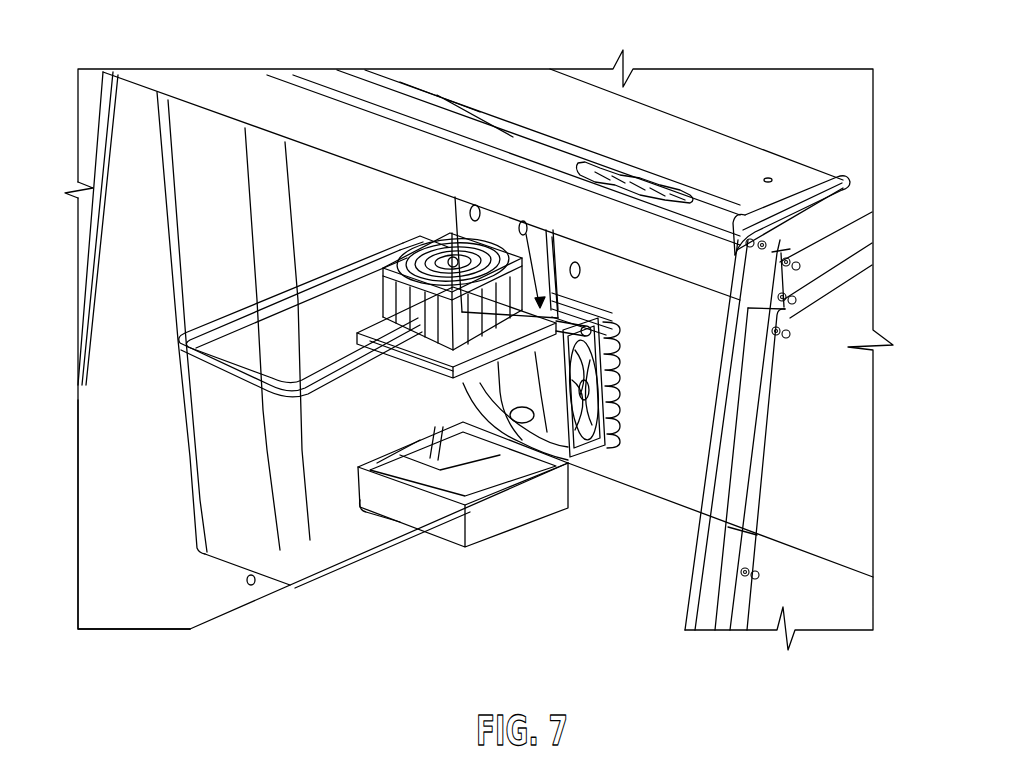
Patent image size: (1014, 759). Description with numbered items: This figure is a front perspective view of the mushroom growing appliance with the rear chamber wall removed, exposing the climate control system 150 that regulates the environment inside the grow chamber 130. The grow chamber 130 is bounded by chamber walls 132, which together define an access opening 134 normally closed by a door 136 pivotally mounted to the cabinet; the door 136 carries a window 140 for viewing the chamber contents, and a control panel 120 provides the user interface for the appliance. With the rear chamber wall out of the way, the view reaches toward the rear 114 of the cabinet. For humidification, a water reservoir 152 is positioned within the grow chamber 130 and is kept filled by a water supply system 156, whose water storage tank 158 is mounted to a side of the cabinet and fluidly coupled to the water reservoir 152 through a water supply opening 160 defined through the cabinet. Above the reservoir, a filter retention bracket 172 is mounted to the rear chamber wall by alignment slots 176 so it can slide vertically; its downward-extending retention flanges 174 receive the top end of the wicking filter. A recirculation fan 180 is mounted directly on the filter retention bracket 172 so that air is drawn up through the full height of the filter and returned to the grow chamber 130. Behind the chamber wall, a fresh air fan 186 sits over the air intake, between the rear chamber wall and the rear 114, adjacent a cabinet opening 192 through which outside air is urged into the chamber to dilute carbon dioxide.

The rear 114 is at (703, 412).
The control panel 120 is at (662, 182).
The grow chamber 130 is at (270, 623).
The chamber walls 132 is at (136, 606).
The access opening 134 is at (600, 605).
The door 136 is at (845, 179).
The window 140 is at (830, 107).
The climate control system 150 is at (437, 562).
The water reservoir 152 is at (520, 536).
The water supply system 156 is at (177, 327).
The water storage tank 158 is at (177, 378).
The water supply opening 160 is at (373, 516).
The filter retention bracket 172 is at (521, 222).
The retention flanges 174 is at (408, 360).
The alignment slots 176 is at (537, 224).
The recirculation fan 180 is at (416, 252).
The fresh air fan 186 is at (565, 356).
The cabinet opening 192 is at (618, 392).